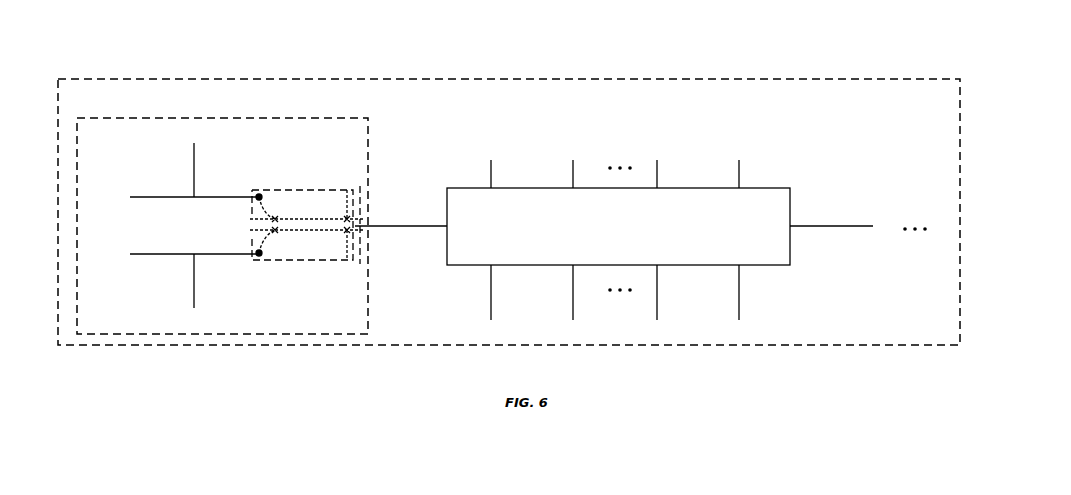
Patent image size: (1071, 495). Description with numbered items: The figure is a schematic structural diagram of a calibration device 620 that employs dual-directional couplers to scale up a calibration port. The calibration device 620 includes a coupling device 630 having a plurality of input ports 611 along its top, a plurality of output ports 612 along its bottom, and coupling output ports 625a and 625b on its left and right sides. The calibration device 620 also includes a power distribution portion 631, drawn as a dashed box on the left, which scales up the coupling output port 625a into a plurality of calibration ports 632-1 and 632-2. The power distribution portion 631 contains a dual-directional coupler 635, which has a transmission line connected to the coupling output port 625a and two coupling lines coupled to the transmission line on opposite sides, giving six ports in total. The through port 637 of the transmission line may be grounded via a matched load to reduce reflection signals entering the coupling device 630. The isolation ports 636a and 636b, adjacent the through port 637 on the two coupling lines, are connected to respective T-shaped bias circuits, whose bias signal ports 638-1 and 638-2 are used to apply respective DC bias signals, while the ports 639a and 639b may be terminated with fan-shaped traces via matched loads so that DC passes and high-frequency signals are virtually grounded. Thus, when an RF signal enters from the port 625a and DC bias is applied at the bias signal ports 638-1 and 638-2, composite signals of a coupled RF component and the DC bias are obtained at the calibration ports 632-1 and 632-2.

The calibration device 620 is at (436, 79).
The power distribution portion 631 is at (276, 118).
The bias signal port 638-1 is at (193, 160).
The bias signal port 638-2 is at (193, 292).
The port 639a is at (174, 197).
The port 639b is at (174, 253).
The dual-directional coupler 635 is at (316, 190).
The isolation port 636a is at (256, 194).
The isolation port 636b is at (256, 256).
The through port 637 is at (292, 226).
The calibration port 632-1 is at (342, 196).
The calibration port 632-2 is at (342, 254).
The coupling output port 625a is at (436, 227).
The coupling device 630 is at (446, 213).
The input ports 611 is at (491, 172).
The output ports 612 is at (491, 290).
The coupling output port 625b is at (800, 228).